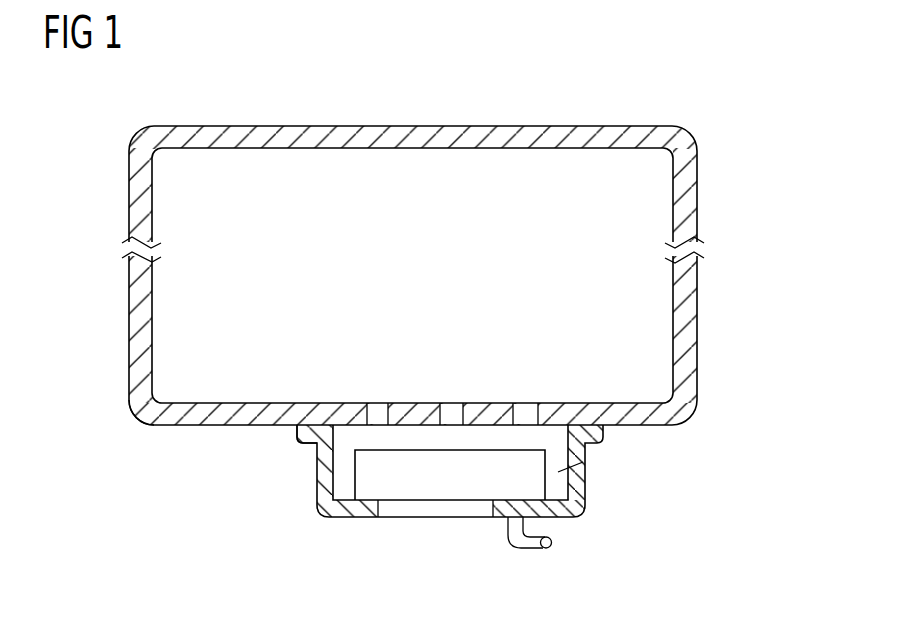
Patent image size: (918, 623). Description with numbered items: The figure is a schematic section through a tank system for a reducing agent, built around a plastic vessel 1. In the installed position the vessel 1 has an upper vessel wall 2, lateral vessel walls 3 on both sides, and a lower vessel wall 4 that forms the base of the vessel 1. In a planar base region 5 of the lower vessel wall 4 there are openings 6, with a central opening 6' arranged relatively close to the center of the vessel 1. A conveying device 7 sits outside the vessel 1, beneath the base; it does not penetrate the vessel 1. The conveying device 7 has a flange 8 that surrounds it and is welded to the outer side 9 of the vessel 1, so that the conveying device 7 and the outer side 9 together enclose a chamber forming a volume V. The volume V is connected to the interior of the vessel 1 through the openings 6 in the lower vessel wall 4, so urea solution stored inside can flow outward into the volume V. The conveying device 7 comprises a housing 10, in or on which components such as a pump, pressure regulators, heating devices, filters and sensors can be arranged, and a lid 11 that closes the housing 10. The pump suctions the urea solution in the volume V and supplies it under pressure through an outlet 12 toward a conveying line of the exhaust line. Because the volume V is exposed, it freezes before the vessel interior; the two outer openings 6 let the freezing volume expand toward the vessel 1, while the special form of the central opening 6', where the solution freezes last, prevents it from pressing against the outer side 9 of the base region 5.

The vessel 1 is at (720, 106).
The upper vessel wall 2 is at (451, 126).
The lateral vessel walls 3 is at (137, 297).
The lower vessel wall 4 is at (233, 412).
The planar base region 5 is at (413, 390).
The openings 6 is at (452, 370).
The central opening 6' is at (454, 370).
The conveying device 7 is at (312, 526).
The flange 8 is at (304, 444).
The outer side 9 is at (162, 444).
The housing 10 is at (466, 470).
The lid 11 is at (413, 508).
The outlet 12 is at (552, 540).
The volume V is at (583, 462).